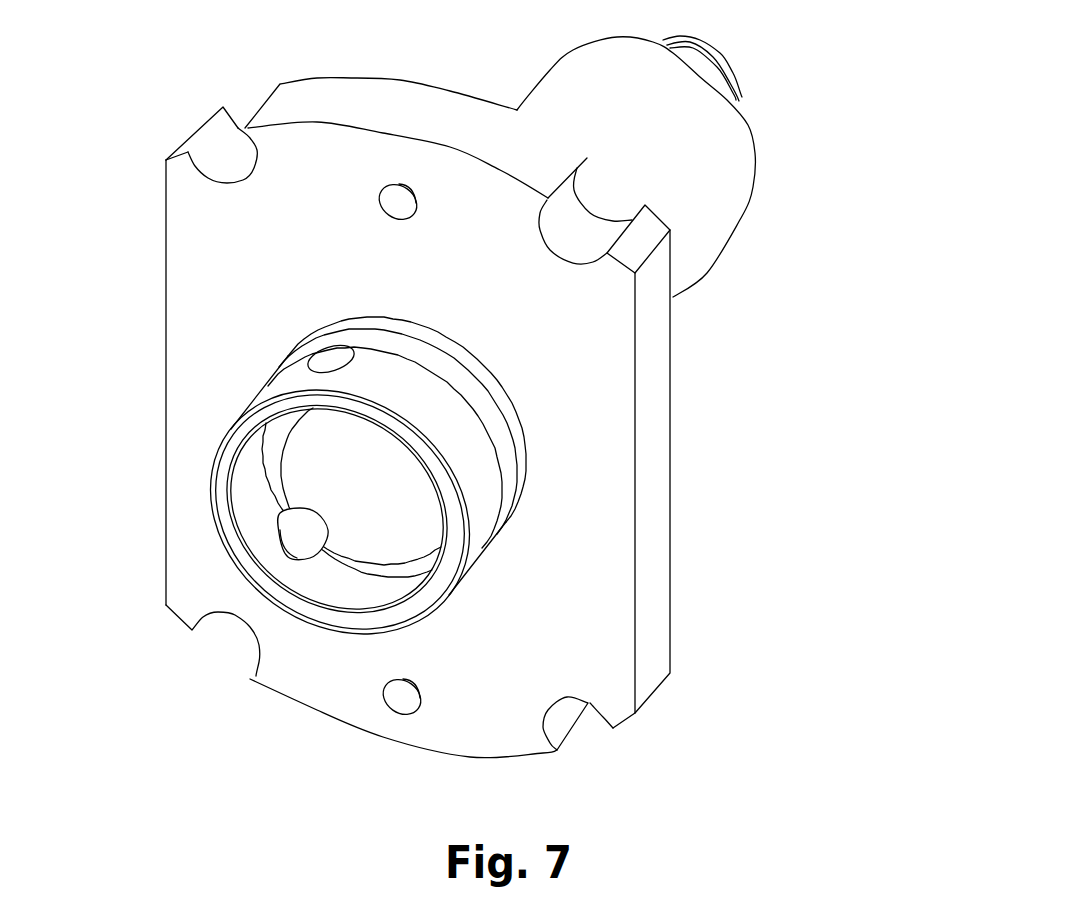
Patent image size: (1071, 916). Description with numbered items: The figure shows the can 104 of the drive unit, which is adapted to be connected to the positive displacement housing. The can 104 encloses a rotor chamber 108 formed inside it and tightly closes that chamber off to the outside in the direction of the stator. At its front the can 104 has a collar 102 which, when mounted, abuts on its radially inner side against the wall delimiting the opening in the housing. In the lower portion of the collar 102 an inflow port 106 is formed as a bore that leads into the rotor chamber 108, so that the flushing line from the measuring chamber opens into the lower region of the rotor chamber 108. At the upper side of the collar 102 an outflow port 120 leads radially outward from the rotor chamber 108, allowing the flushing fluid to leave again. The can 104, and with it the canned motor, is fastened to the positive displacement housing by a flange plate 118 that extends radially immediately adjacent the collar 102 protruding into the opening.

The collar 102 is at (478, 475).
The can 104 is at (680, 152).
The inflow port 106 is at (287, 545).
The rotor chamber 108 is at (392, 497).
The flange plate 118 is at (583, 640).
The outflow port 120 is at (330, 360).